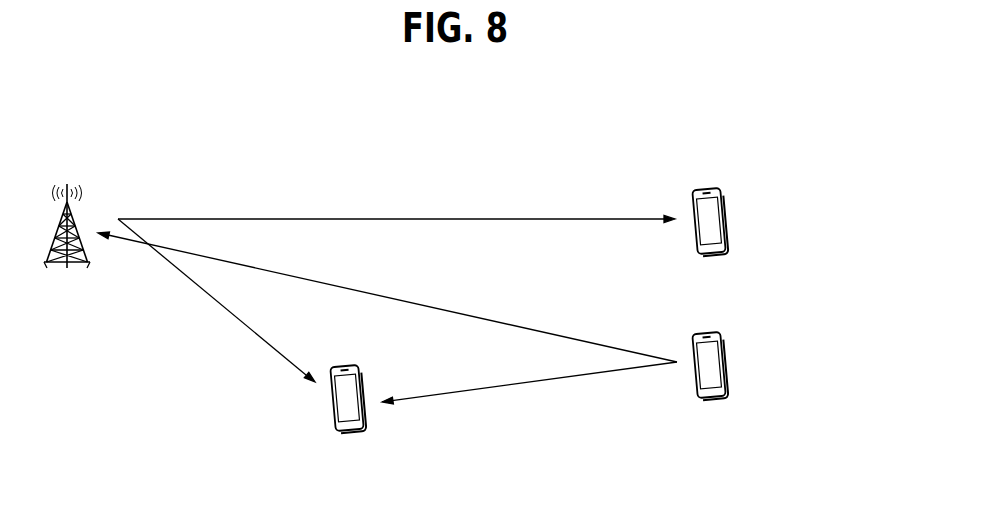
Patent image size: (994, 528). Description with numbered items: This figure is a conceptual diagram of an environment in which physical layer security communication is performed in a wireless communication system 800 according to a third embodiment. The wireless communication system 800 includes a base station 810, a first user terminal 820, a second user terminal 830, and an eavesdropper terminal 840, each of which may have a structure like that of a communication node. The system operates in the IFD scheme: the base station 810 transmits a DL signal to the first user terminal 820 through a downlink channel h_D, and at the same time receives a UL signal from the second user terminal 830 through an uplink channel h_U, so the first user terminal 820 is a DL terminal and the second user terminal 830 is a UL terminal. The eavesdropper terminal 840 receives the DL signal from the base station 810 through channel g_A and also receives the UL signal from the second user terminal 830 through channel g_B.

The wireless communication system 800 is at (466, 154).
The base station 810 is at (66, 185).
The first user terminal 820 is at (704, 188).
The second user terminal 830 is at (704, 332).
The eavesdropper terminal 840 is at (343, 365).